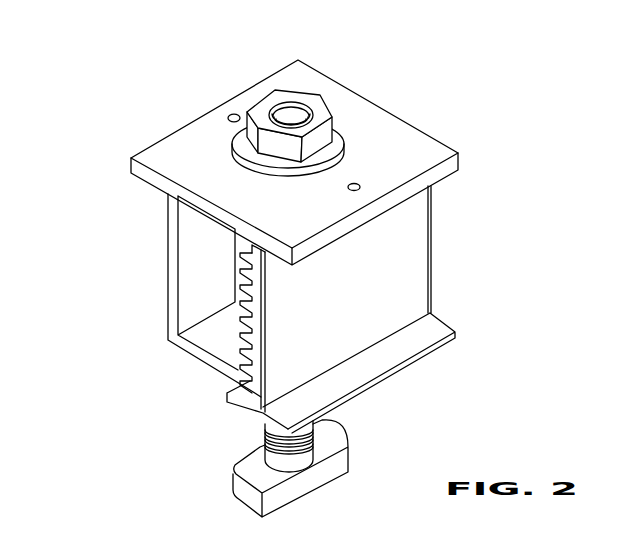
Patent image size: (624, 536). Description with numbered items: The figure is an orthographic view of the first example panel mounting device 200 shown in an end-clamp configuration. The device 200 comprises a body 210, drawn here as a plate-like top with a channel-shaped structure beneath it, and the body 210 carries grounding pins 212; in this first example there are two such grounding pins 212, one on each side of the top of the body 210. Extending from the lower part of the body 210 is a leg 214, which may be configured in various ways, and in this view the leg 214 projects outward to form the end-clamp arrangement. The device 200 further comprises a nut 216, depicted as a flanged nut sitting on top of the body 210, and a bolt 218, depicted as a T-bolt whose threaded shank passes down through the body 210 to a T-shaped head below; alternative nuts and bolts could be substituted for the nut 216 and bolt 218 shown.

The panel mounting device 200 is at (374, 80).
The body 210 is at (162, 130).
The grounding pins 212 is at (234, 114).
The leg 214 is at (452, 328).
The nut 216 is at (293, 92).
The bolt 218 is at (239, 461).